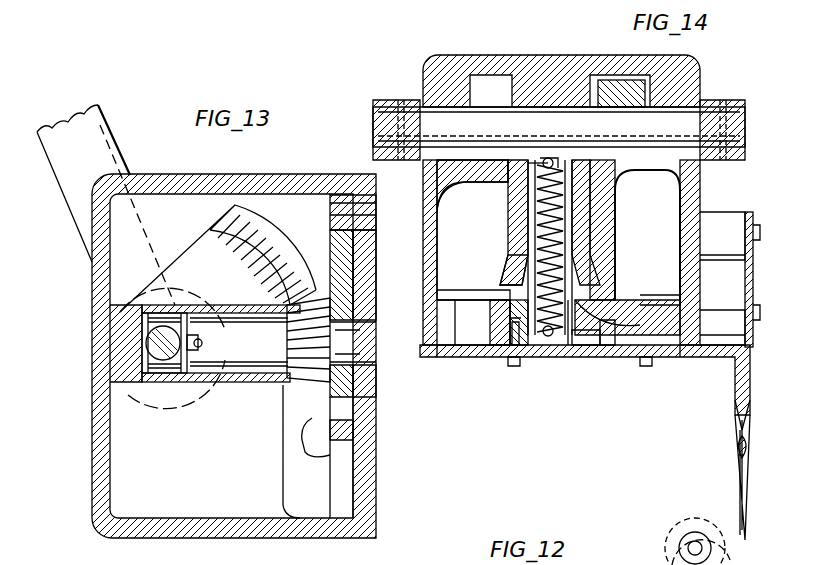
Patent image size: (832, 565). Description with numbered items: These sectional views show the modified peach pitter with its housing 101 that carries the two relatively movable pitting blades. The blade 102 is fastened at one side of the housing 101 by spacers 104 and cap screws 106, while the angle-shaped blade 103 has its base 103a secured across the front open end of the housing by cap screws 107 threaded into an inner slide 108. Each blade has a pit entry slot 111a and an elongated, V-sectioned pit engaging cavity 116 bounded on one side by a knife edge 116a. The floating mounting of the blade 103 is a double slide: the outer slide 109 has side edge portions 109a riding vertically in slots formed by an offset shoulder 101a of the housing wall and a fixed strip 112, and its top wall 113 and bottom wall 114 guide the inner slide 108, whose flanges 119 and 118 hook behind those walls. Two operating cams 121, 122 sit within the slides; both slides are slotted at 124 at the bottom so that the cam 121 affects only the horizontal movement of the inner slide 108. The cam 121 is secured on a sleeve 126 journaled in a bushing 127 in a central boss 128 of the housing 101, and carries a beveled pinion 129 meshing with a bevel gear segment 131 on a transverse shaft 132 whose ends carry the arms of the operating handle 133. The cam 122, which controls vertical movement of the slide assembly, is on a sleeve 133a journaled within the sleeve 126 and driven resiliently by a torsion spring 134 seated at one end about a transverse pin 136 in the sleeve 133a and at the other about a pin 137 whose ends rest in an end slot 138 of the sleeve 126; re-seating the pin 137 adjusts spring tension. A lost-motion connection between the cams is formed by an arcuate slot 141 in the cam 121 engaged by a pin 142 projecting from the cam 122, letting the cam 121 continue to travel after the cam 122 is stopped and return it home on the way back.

In FIG. 13, the housing 101 is at (215, 175).
In FIG. 14, the housing 101 is at (545, 70).
In FIG. 14, the offset shoulder 101a is at (435, 275).
In FIG. 14, the blade 102 is at (745, 497).
In FIG. 14, the blade 103 is at (735, 383).
In FIG. 14, the base of angle-shaped blade 103a is at (465, 357).
In FIG. 14, the spacers 104 is at (705, 318).
In FIG. 14, the cap screws 106 is at (758, 305).
In FIG. 14, the cap screws 107 is at (640, 366).
In FIG. 13, the inner slide 108 is at (312, 219).
In FIG. 14, the inner slide 108 is at (486, 323).
In FIG. 13, the outer slide 109 is at (360, 455).
In FIG. 14, the outer slide 109 is at (450, 300).
In FIG. 14, the side edge portions 109a is at (437, 300).
In FIG. 14, the pit entry slot 111a is at (740, 478).
In FIG. 14, the fixed strip 112 is at (680, 357).
In FIG. 13, the top wall 113 is at (376, 209).
In FIG. 13, the bottom wall 114 is at (373, 432).
In FIG. 14, the pit engaging cavity 116 is at (740, 440).
In FIG. 14, the knife edge 116a is at (738, 456).
In FIG. 13, the bottom flange 118 is at (305, 455).
In FIG. 13, the top flange 119 is at (312, 190).
In FIG. 13, the operating cam 121 is at (335, 245).
In FIG. 14, the operating cam 121 is at (612, 290).
In FIG. 13, the operating cam 122 is at (363, 272).
In FIG. 14, the operating cam 122 is at (612, 345).
In FIG. 13, the slot 124 is at (383, 495).
In FIG. 13, the sleeve 126 is at (268, 328).
In FIG. 14, the sleeve 126 is at (437, 326).
In FIG. 13, the bushing 127 is at (240, 305).
In FIG. 13, the boss 128 is at (212, 305).
In FIG. 13, the beveled pinion 129 is at (290, 390).
In FIG. 14, the beveled pinion 129 is at (508, 260).
In FIG. 13, the bevel gear segment 131 is at (240, 220).
In FIG. 14, the bevel gear segment 131 is at (610, 210).
In FIG. 13, the transverse shaft 132 is at (158, 375).
In FIG. 14, the transverse shaft 132 is at (588, 133).
In FIG. 13, the operating handle 133 is at (92, 128).
In FIG. 14, the operating handle 133 is at (730, 100).
In FIG. 13, the sleeve 133a is at (360, 342).
In FIG. 14, the sleeve 133a is at (570, 340).
In FIG. 14, the torsion spring 134 is at (535, 194).
In FIG. 14, the transverse pin 136 is at (545, 335).
In FIG. 13, the pin 137 is at (210, 344).
In FIG. 14, the pin 137 is at (528, 167).
In FIG. 13, the end slot 138 is at (208, 375).
In FIG. 14, the end slot 138 is at (545, 158).
In FIG. 14, the arcuate slot 141 is at (630, 300).
In FIG. 14, the pin 142 is at (590, 350).